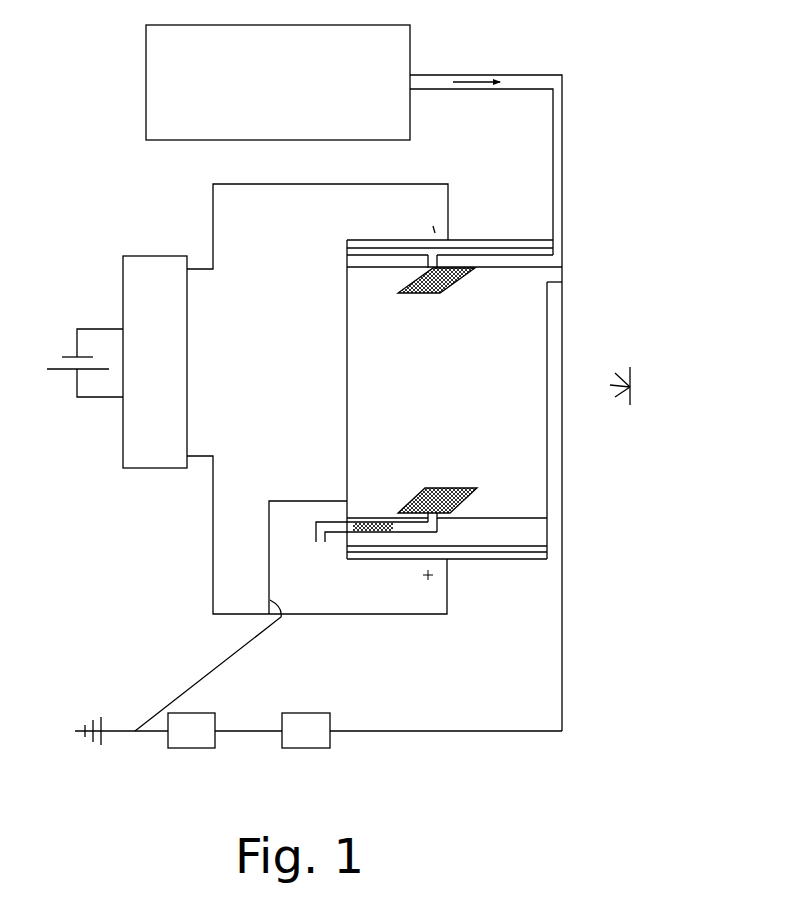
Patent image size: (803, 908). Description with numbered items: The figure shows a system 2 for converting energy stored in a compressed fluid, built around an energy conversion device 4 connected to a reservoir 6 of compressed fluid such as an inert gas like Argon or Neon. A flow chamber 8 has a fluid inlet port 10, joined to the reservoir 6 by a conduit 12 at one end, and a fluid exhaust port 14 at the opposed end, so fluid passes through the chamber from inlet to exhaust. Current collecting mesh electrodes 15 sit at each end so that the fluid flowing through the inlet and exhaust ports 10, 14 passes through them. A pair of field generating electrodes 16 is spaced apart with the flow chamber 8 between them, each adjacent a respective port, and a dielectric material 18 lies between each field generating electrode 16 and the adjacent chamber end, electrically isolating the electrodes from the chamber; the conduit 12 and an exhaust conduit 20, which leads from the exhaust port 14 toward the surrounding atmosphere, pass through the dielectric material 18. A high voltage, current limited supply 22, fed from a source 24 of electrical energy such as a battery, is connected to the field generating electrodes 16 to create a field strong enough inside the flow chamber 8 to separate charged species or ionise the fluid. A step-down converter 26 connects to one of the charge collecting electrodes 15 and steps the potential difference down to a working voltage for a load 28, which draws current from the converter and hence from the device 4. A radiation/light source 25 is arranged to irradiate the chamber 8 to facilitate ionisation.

The system 2 is at (86, 54).
The energy conversion device 4 is at (420, 399).
The reservoir 6 is at (286, 87).
The flow chamber 8 is at (447, 399).
The fluid inlet port 10 is at (410, 293).
The conduit 12 is at (470, 91).
The fluid exhaust port 14 is at (440, 518).
The current collecting mesh electrode 15 is at (452, 293).
The field generating electrode 16 is at (458, 407).
The dielectric material 18 is at (358, 261).
The exhaust conduit 20 is at (317, 538).
The high voltage, current limited supply 22 is at (170, 375).
The source of electrical energy 24 is at (83, 408).
The radiation/light source 25 is at (630, 375).
The step-down converter 26 is at (388, 730).
The load 28 is at (178, 674).